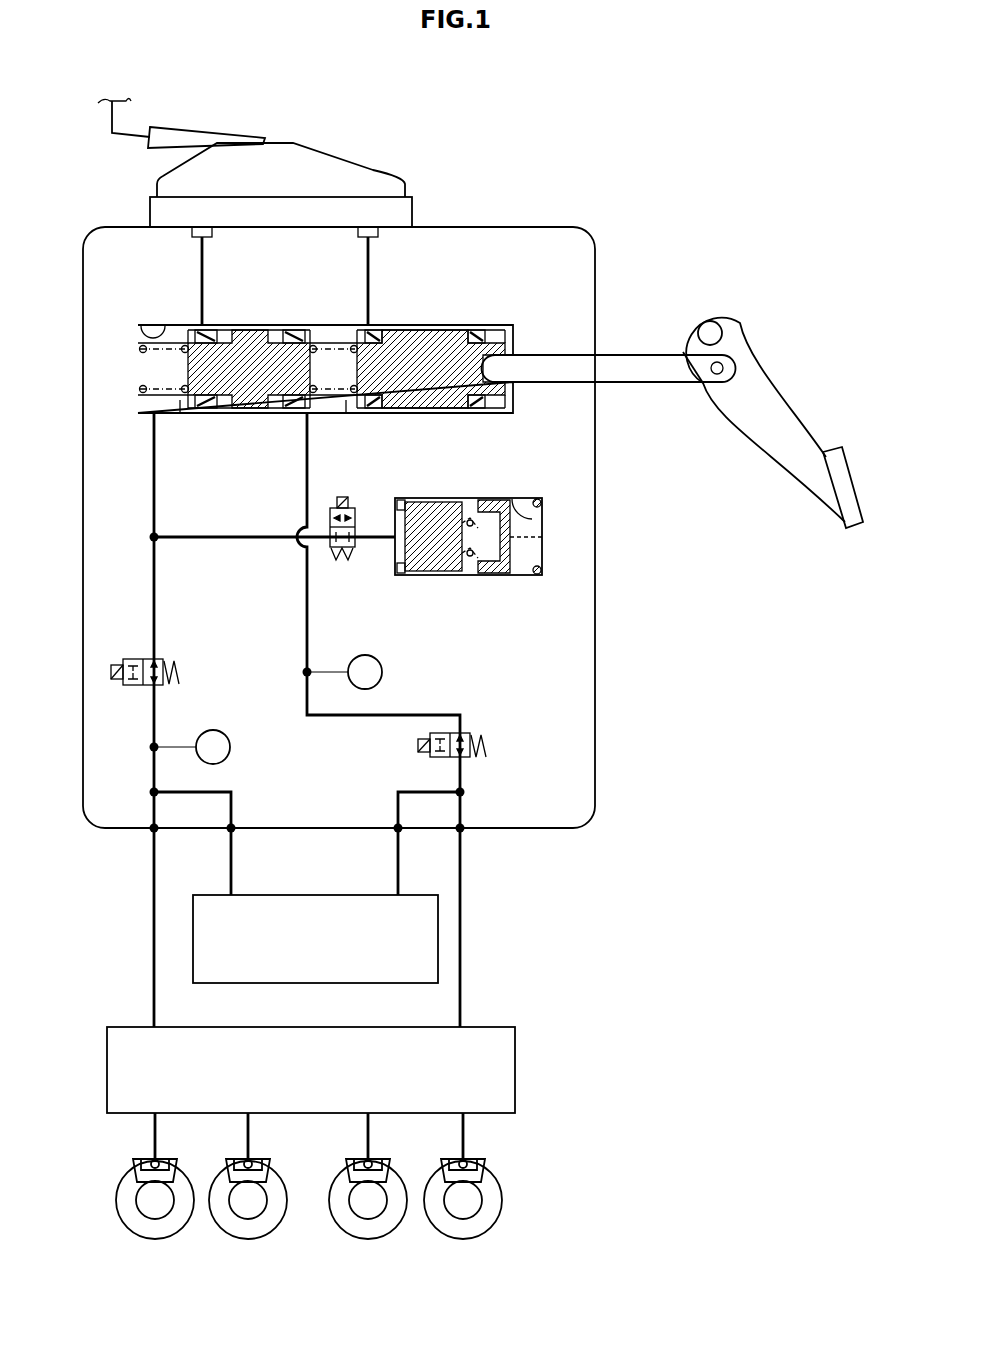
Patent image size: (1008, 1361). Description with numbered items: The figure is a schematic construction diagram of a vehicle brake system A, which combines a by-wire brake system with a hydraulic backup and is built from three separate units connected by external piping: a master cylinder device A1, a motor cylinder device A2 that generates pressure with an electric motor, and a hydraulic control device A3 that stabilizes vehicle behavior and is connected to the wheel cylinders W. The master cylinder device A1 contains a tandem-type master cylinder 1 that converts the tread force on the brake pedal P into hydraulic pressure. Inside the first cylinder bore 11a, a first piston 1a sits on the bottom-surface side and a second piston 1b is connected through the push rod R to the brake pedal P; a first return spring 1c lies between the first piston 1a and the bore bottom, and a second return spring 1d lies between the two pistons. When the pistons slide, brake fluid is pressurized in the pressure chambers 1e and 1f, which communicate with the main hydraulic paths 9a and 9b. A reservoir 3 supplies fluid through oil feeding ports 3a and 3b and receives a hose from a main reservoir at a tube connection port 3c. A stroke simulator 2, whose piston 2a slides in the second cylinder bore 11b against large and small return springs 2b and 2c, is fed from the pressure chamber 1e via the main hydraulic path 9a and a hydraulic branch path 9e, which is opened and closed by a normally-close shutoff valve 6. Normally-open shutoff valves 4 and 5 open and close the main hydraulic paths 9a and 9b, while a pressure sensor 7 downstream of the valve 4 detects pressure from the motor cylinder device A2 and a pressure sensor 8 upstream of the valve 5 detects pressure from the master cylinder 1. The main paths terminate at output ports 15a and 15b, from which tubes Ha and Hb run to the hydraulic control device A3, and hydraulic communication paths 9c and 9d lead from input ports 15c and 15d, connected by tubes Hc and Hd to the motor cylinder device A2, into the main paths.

The master cylinder 1 is at (299, 362).
The first piston 1a is at (253, 368).
The second piston 1b is at (428, 368).
The first return spring 1c is at (181, 402).
The second return spring 1d is at (347, 402).
The pressure chamber 1e is at (169, 382).
The pressure chamber 1f is at (335, 382).
The stroke simulator 2 is at (490, 534).
The piston 2a is at (438, 560).
The large return spring 2b is at (474, 560).
The small return spring 2c is at (518, 562).
The reservoir 3 is at (332, 146).
The oil feeding port 3a is at (194, 243).
The oil feeding port 3b is at (360, 243).
The tube connection port 3c is at (188, 128).
The normally-open shutoff valve 4 is at (165, 684).
The normally-open shutoff valve 5 is at (471, 757).
The normally-close shutoff valve 6 is at (330, 552).
The pressure sensor 7 is at (194, 747).
The pressure sensor 8 is at (346, 672).
The main hydraulic path 9a is at (156, 597).
The main hydraulic path 9b is at (305, 627).
The hydraulic communication path 9c is at (218, 790).
The hydraulic communication path 9d is at (418, 791).
The hydraulic branch path 9e is at (253, 540).
The first cylinder bore 11a is at (140, 330).
The second cylinder bore 11b is at (532, 519).
The output port 15a is at (150, 827).
The output port 15b is at (465, 827).
The input port 15c is at (235, 827).
The input port 15d is at (395, 827).
The vehicle brake system A is at (509, 202).
The master cylinder device A1 is at (596, 728).
The motor cylinder device A2 is at (327, 951).
The hydraulic control device A3 is at (327, 1079).
The tube Ha is at (152, 872).
The tube Hb is at (463, 872).
The tube Hc is at (234, 872).
The tube Hd is at (396, 872).
The push rod R is at (637, 357).
The brake pedal P is at (838, 515).
The wheel cylinder W is at (165, 1160).